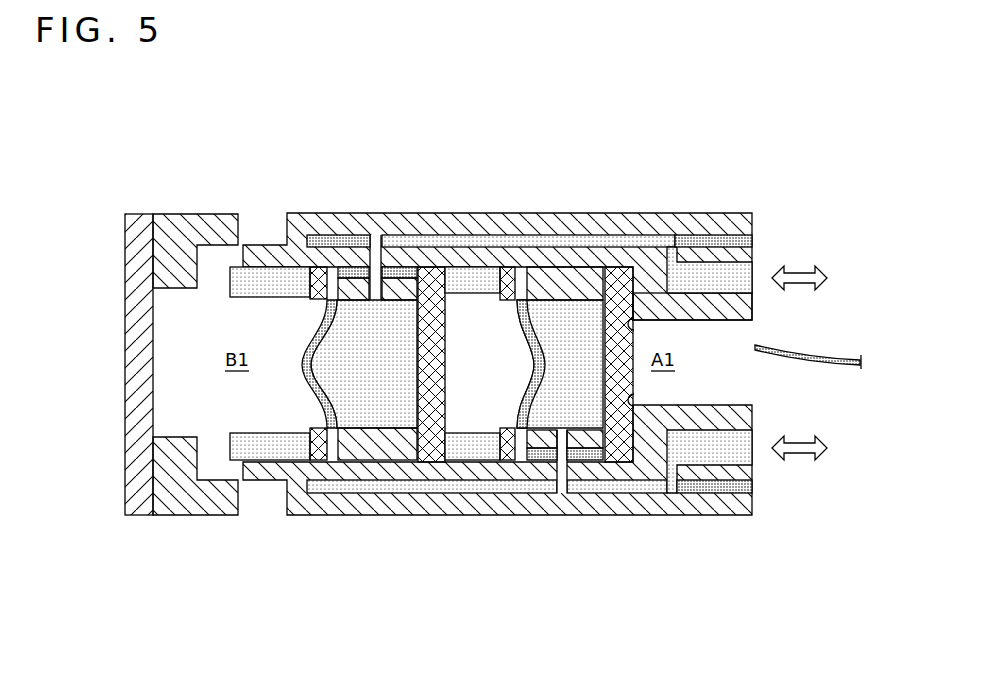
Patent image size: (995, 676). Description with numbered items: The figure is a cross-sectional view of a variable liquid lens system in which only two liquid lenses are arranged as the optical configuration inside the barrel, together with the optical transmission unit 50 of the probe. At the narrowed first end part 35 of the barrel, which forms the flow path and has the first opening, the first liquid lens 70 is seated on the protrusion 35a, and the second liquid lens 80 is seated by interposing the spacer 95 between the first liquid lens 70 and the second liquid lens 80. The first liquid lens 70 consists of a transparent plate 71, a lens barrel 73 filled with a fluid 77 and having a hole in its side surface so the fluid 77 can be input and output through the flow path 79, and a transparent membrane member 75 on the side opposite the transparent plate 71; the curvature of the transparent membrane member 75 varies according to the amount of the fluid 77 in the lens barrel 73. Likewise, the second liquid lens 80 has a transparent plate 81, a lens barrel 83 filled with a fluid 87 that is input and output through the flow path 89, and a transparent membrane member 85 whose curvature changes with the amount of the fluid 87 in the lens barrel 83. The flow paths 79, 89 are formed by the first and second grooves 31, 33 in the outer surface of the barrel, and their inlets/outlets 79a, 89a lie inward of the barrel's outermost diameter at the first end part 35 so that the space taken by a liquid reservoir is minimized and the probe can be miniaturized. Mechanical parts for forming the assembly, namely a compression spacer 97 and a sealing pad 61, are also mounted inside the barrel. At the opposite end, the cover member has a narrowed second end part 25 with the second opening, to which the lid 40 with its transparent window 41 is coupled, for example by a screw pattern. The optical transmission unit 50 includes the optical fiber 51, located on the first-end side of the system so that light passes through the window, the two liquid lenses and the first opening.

The second end part 25 is at (255, 467).
The first groove 31 is at (643, 478).
The second groove 33 is at (503, 246).
The first end part 35 is at (752, 307).
The protrusion 35a is at (640, 326).
The lid 40 is at (169, 198).
The transparent window 41 is at (140, 352).
The optical transmission unit 50 is at (806, 376).
The optical fiber 51 is at (822, 357).
The sealing pad 61 is at (327, 243).
The first liquid lens 70 is at (580, 320).
The transparent plate 71 is at (618, 365).
The lens barrel 73 is at (551, 442).
The transparent membrane member 75 is at (530, 366).
The fluid 77 is at (563, 374).
The flow path 79 is at (663, 487).
The inlet/outlet 79a is at (690, 452).
The second liquid lens 80 is at (376, 326).
The transparent plate 81 is at (429, 367).
The lens barrel 83 is at (395, 453).
The transparent membrane member 85 is at (312, 388).
The fluid 87 is at (360, 374).
The flow path 89 is at (540, 240).
The inlet/outlet 89a is at (752, 268).
The spacer 95 is at (467, 273).
The compression spacer 97 is at (257, 279).